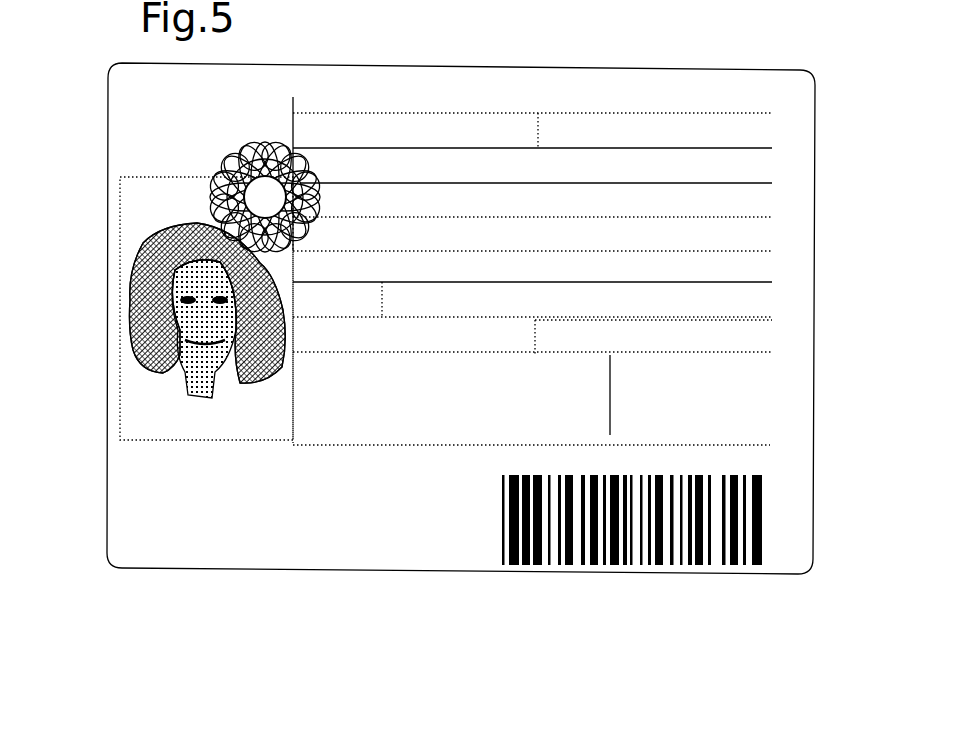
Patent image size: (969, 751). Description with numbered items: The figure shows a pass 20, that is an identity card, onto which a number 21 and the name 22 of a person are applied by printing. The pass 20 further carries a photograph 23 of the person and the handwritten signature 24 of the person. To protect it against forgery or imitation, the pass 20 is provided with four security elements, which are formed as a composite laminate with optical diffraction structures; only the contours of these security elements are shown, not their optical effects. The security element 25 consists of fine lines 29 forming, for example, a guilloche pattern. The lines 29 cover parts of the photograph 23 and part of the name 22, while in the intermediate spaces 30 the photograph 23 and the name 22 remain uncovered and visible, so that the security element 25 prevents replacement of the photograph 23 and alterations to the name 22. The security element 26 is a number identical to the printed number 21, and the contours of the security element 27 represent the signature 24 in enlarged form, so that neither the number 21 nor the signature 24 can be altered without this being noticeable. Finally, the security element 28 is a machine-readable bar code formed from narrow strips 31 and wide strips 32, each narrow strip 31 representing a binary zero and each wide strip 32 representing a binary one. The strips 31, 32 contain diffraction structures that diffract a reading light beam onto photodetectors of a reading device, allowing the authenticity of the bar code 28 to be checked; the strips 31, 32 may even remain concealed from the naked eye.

The pass 20 is at (236, 557).
The number 21 is at (745, 141).
The name 22 is at (433, 167).
The photograph 23 is at (130, 403).
The signature 24 is at (765, 344).
The security element 25 is at (205, 168).
The security element 26 is at (133, 80).
The security element 27 is at (195, 452).
The bar code 28 is at (490, 560).
The fine lines 29 is at (215, 190).
The intermediate spaces 30 is at (225, 203).
The narrow strips 31 is at (549, 565).
The wide strips 32 is at (538, 565).